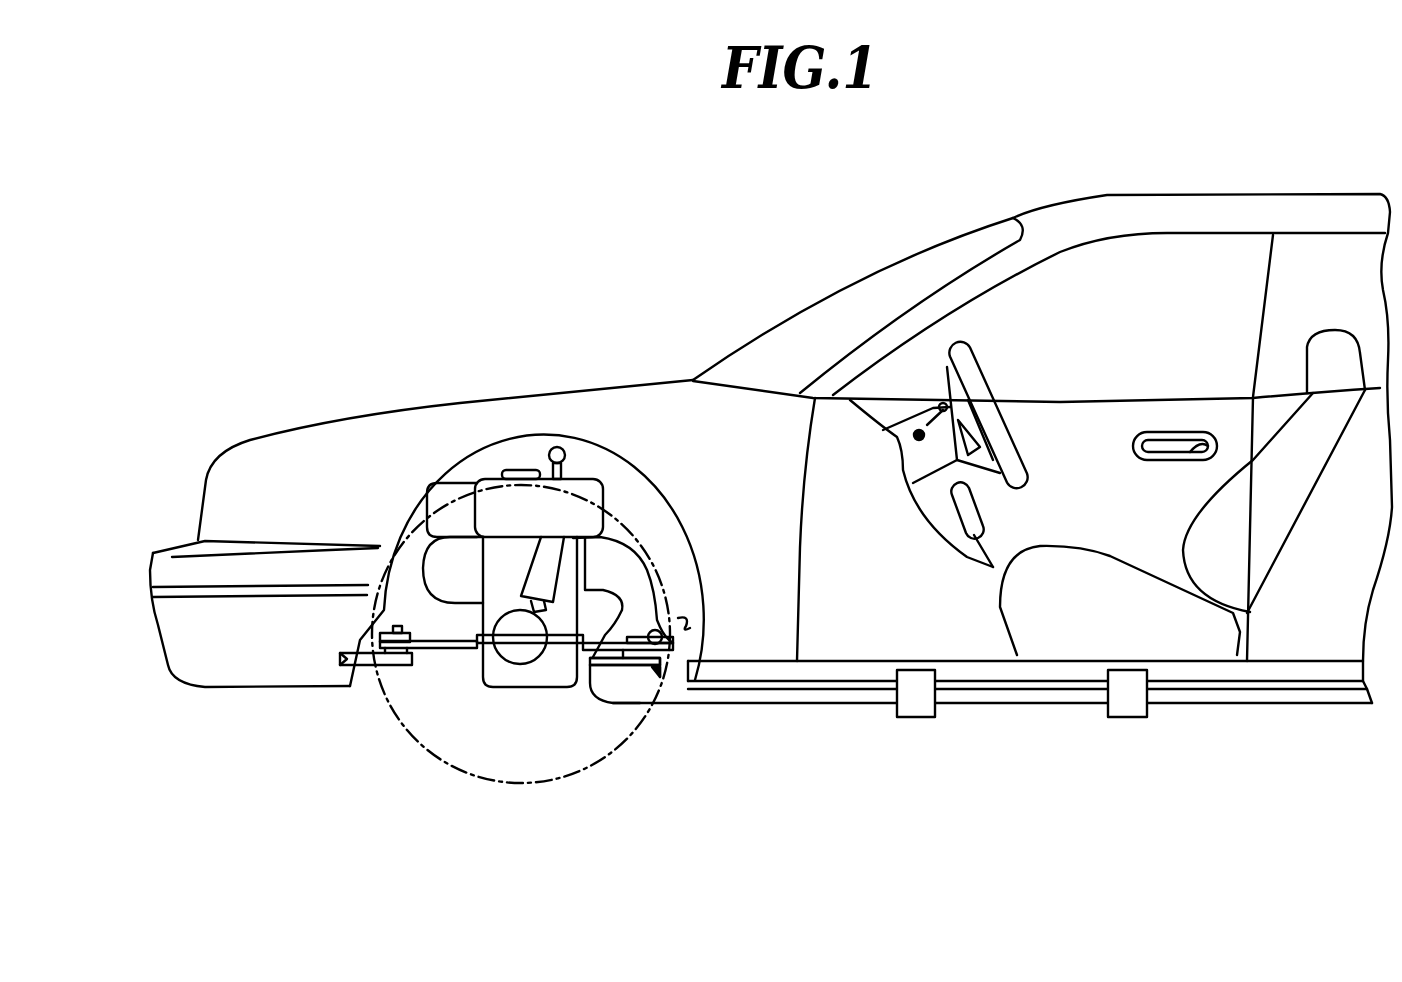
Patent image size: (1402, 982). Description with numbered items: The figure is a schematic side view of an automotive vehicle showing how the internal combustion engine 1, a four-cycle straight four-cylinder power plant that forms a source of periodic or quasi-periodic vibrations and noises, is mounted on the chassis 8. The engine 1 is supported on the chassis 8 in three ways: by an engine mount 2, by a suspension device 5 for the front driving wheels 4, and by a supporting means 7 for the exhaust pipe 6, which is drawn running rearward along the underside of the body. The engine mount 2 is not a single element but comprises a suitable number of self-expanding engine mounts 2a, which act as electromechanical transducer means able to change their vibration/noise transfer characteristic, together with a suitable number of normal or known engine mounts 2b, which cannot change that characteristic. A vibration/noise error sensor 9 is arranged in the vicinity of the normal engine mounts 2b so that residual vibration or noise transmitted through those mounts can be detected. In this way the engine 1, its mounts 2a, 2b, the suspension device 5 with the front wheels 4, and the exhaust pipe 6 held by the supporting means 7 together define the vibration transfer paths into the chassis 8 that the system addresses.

The internal combustion engine 1 is at (476, 474).
The engine mount 2 is at (500, 752).
The self-expanding engine mounts 2a is at (380, 667).
The normal engine mounts 2b is at (627, 655).
The front wheels 4 is at (625, 665).
The suspension device 5 is at (512, 478).
The exhaust pipe 6 is at (635, 695).
The supporting means 7 is at (917, 717).
The chassis 8 is at (655, 677).
The vibration/noise error sensor 9 is at (655, 637).